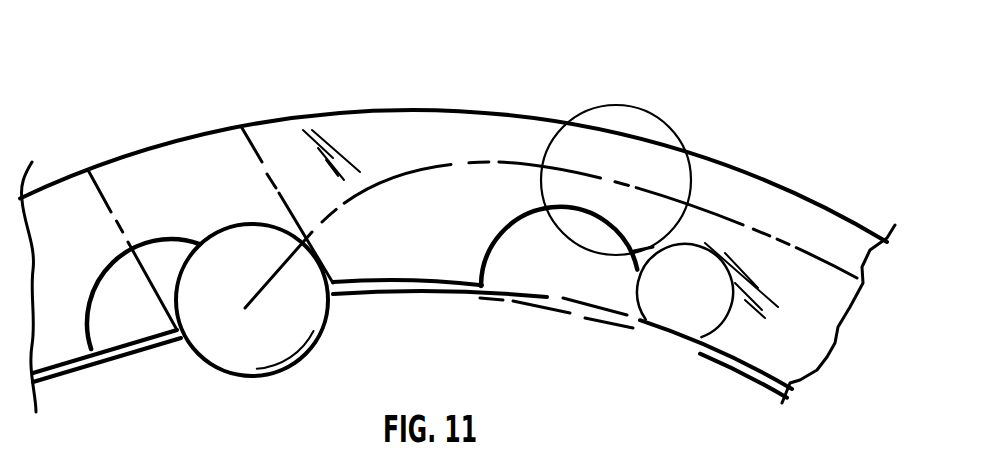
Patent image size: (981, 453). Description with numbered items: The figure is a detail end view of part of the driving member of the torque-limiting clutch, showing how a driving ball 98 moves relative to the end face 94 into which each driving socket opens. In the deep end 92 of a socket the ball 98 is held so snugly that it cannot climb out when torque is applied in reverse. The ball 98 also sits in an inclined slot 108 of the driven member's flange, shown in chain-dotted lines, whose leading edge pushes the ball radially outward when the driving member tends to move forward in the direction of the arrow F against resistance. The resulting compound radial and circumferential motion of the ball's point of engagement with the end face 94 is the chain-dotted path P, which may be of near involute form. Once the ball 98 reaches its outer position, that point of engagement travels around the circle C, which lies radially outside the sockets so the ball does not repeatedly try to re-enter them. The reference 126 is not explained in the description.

The end face 94 is at (408, 140).
The slot 108 is at (103, 197).
The deep end portion 92 is at (130, 318).
The driving ball 98 is at (315, 323).
The guide rail 126 is at (377, 297).
The path P is at (372, 198).
The circle C is at (787, 246).
The arrow F is at (401, 344).